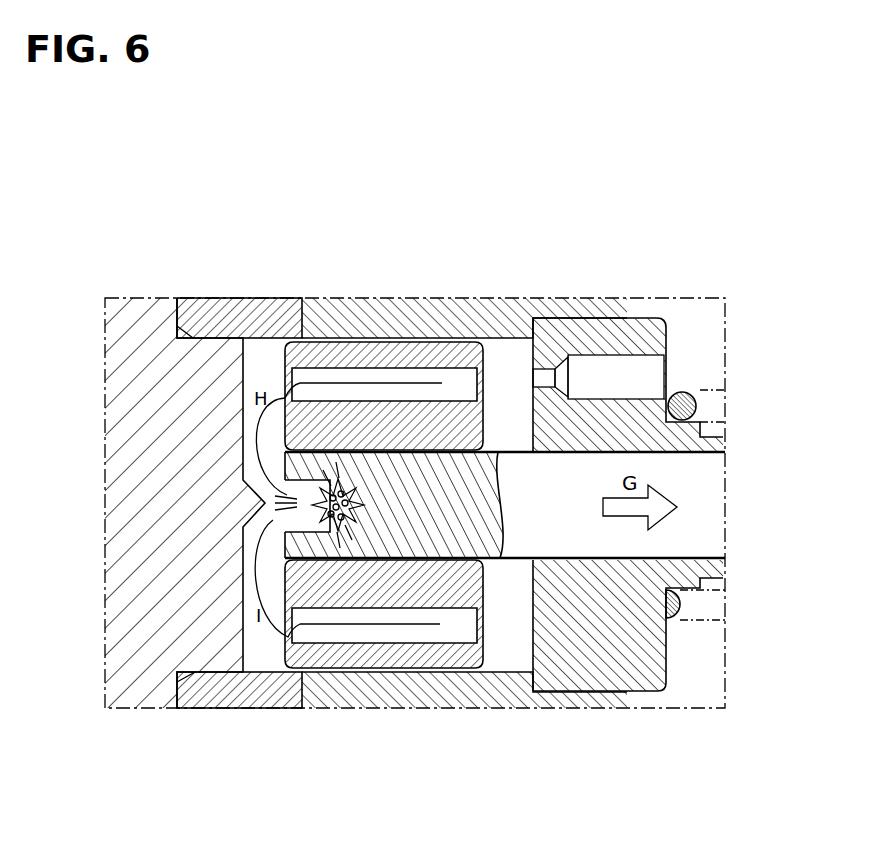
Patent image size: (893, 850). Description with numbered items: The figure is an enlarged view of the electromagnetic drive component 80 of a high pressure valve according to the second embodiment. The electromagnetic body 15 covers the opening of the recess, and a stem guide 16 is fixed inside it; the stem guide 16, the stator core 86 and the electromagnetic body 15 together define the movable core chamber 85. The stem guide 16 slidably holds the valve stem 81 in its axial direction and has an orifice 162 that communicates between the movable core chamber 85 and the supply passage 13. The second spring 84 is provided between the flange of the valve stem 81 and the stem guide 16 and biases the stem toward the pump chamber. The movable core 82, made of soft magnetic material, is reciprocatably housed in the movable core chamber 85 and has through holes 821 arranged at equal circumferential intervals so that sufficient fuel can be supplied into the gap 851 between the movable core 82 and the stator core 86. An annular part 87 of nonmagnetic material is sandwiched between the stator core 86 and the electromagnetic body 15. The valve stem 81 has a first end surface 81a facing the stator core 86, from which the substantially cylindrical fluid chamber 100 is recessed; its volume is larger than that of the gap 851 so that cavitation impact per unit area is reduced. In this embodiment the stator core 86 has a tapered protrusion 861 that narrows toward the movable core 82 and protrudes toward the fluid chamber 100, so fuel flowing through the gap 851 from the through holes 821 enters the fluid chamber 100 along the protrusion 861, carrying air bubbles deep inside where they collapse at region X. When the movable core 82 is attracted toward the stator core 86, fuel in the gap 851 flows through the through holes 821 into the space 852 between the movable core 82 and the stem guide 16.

The electromagnetic drive component 80 is at (626, 224).
The valve stem 81 is at (680, 532).
The first end surface 81a is at (283, 551).
The movable core 82 is at (333, 658).
The through holes 821 is at (428, 378).
The second spring 84 is at (702, 392).
The movable core chamber 85 is at (500, 378).
The gap 851 is at (258, 642).
The space 852 is at (498, 622).
The stator core 86 is at (152, 408).
The protrusion 861 is at (263, 505).
The annular part 87 is at (243, 310).
The fluid chamber 100 is at (283, 522).
The supply passage 13 is at (695, 337).
The electromagnetic body 15 is at (366, 305).
The stem guide 16 is at (632, 630).
The orifice 162 is at (548, 378).